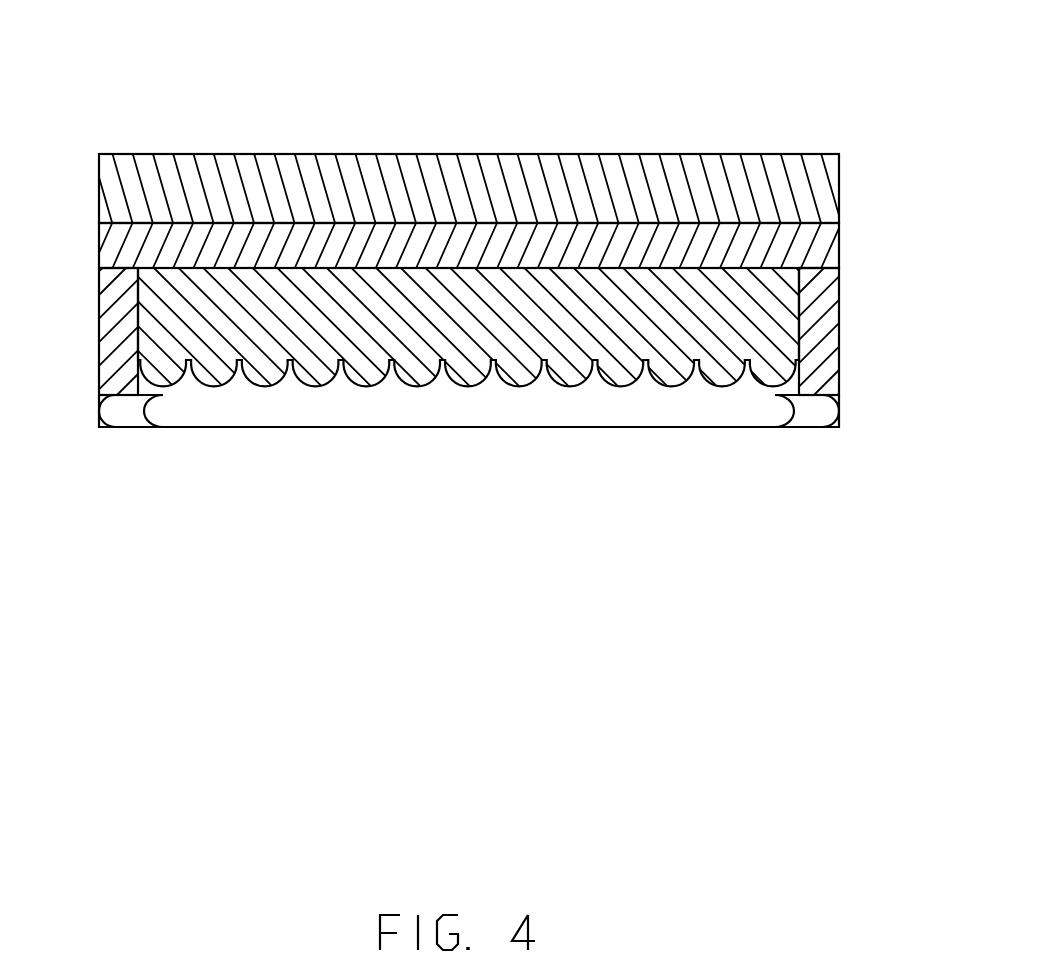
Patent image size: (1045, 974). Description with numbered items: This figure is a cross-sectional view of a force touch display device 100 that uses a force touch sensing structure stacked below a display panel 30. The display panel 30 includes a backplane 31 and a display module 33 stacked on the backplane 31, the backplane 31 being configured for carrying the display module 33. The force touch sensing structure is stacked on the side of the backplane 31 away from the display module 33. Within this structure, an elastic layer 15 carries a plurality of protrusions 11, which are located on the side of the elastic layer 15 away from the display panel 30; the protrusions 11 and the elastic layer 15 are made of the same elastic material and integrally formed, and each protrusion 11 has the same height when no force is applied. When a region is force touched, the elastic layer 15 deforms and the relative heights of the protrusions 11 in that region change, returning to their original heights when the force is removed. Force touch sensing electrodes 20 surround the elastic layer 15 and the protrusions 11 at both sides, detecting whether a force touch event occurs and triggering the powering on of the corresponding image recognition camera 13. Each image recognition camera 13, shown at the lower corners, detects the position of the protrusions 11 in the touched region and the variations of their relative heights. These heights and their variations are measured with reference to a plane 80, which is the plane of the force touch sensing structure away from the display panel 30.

The force touch display device 100 is at (460, 78).
The display panel 30 is at (899, 179).
The display module 33 is at (828, 190).
The backplane 31 is at (828, 236).
The force touch sensing electrodes 20 is at (114, 344).
The elastic layer 15 is at (440, 320).
The protrusions 11 is at (472, 373).
The plane 80 is at (676, 428).
The image recognition camera 13 is at (118, 410).